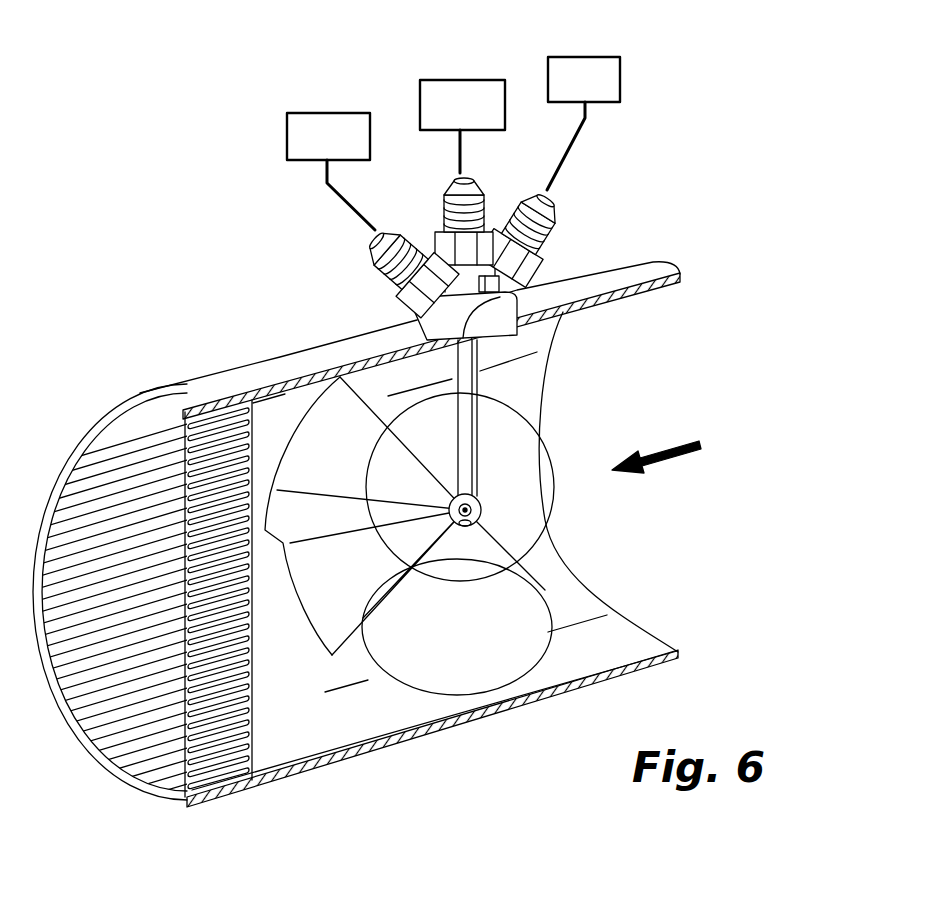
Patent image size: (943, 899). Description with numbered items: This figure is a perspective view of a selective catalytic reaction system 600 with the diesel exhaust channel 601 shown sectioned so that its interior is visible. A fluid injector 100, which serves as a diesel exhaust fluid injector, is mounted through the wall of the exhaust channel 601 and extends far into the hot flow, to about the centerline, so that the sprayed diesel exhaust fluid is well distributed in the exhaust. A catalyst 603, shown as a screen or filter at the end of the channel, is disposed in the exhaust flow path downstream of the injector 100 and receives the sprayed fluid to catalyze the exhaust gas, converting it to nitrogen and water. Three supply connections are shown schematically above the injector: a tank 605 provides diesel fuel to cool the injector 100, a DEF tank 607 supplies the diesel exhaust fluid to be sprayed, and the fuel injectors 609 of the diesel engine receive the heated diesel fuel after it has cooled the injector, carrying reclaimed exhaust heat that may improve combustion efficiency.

The selective catalytic reaction (SCR) system 600 is at (198, 273).
The diesel exhaust channel 601 is at (627, 267).
The catalyst 603 is at (257, 713).
The fluid injector 100 is at (413, 230).
The tank 605 is at (300, 113).
The DEF tank 607 is at (440, 78).
The fuel injectors 609 is at (563, 55).